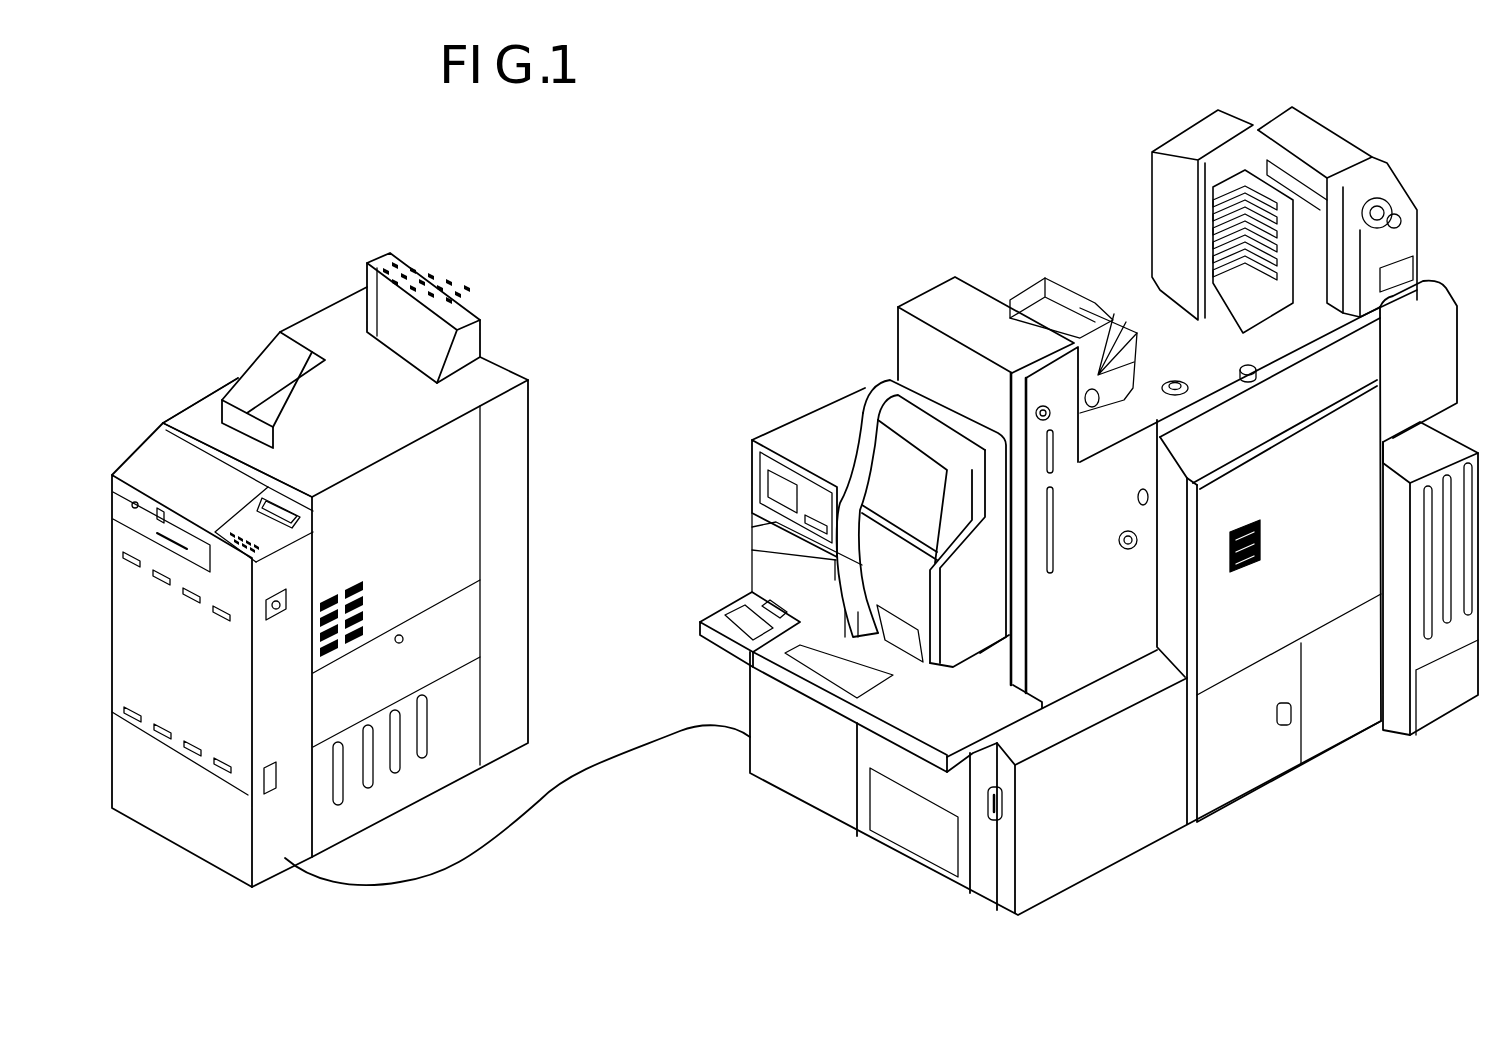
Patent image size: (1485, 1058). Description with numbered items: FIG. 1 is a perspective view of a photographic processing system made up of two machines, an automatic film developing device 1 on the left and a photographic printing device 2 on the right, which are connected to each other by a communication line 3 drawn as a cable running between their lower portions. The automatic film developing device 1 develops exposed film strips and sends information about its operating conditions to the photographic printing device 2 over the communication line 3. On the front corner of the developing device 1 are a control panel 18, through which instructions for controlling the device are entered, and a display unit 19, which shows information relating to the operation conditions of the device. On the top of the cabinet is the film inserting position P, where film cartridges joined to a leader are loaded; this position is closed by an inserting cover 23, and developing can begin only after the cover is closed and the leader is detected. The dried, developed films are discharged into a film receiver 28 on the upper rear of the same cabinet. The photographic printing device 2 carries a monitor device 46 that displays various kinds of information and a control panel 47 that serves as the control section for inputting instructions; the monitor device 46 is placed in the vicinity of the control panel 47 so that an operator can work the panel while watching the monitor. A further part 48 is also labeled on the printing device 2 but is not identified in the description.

The automatic film developing device 1 is at (278, 225).
The film inserting position P is at (131, 421).
The photographic printing device 2 is at (959, 181).
The communication line 3 is at (605, 763).
The control panel 18 is at (222, 533).
The display unit 19 is at (273, 524).
The inserting cover 23 is at (165, 438).
The film receiver 28 is at (323, 305).
The monitor device 46 is at (767, 465).
The control panel 47 is at (738, 615).
The column unit 48 is at (1032, 278).